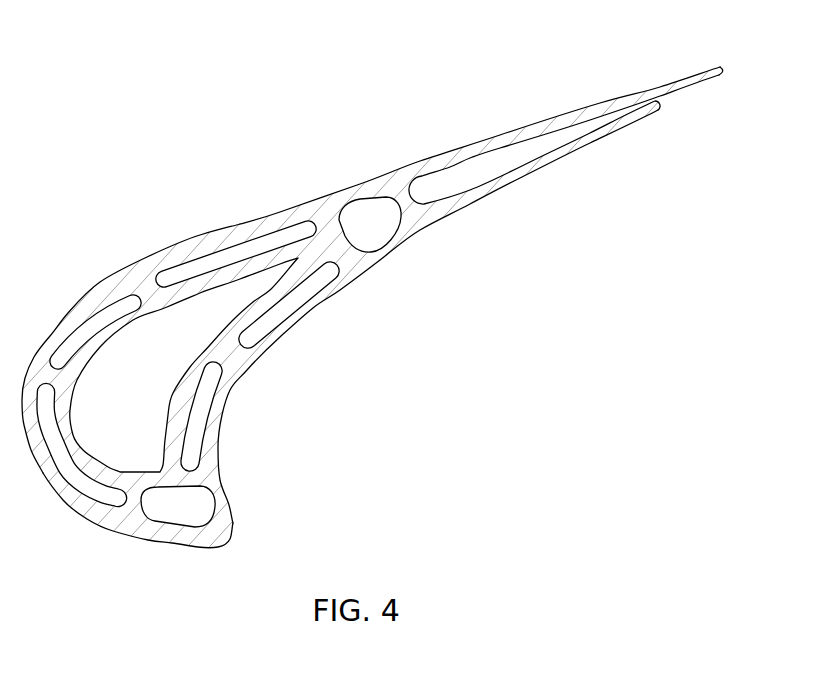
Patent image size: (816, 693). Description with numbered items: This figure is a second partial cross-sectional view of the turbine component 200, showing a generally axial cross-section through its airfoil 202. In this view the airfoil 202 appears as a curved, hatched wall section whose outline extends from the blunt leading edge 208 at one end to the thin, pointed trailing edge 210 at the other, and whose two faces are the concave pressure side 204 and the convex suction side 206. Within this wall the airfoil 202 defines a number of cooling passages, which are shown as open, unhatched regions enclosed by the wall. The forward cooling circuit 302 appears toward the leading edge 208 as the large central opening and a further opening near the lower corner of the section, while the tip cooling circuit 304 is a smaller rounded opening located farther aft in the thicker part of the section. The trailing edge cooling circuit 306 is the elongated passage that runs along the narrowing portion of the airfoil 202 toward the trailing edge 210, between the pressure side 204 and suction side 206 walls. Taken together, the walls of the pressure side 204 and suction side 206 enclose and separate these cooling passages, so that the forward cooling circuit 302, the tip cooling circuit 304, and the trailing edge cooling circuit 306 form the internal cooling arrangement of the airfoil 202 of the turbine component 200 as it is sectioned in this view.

The turbine component 200 is at (162, 84).
The airfoil 202 is at (279, 210).
The pressure side 204 is at (267, 352).
The suction side 206 is at (183, 243).
The leading edge 208 is at (220, 541).
The trailing edge 210 is at (719, 66).
The forward cooling circuit 302 is at (139, 412).
The tip cooling circuit 304 is at (383, 236).
The trailing edge cooling circuit 306 is at (460, 184).